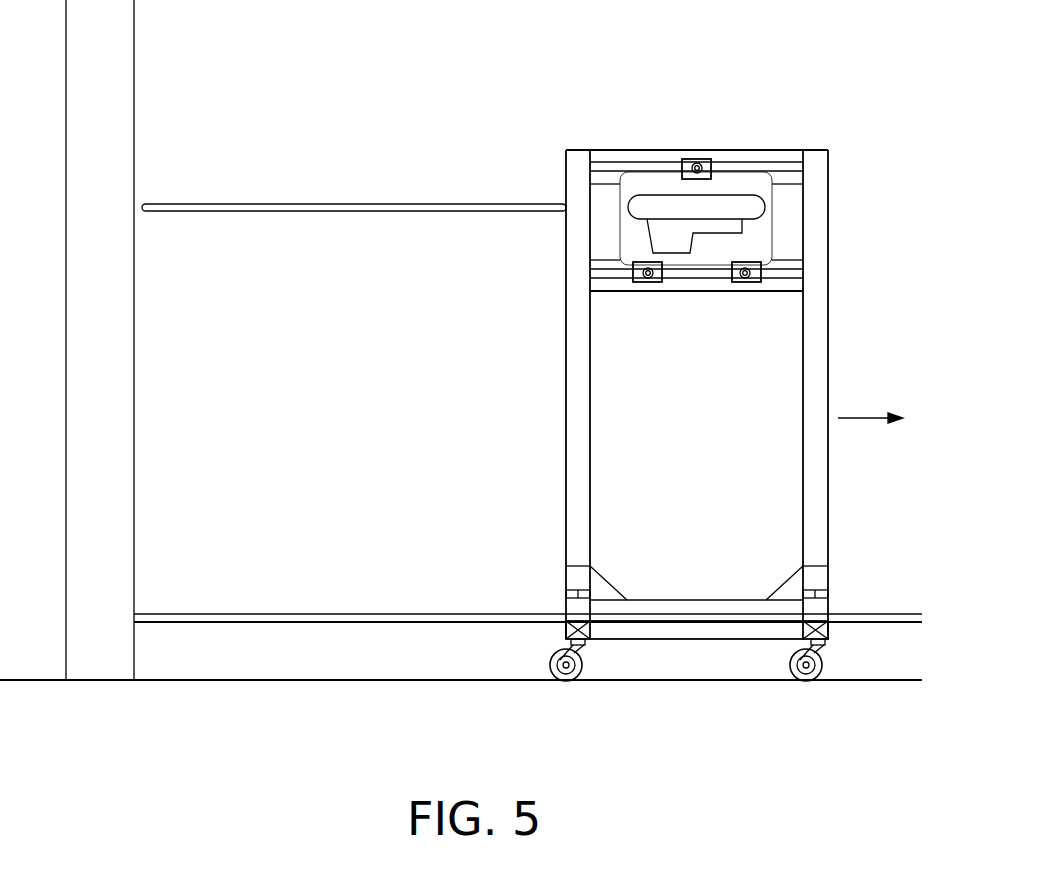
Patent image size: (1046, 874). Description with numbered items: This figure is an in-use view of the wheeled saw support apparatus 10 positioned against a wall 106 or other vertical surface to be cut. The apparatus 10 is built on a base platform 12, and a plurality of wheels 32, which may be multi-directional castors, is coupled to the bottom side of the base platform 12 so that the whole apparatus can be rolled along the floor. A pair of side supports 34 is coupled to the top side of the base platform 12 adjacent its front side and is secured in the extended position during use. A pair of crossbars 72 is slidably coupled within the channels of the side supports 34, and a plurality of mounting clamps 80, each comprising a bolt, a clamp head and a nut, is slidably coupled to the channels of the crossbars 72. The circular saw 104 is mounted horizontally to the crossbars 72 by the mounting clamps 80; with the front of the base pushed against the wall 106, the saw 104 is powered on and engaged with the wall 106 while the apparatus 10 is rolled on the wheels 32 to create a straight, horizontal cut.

The wheeled saw support apparatus 10 is at (864, 324).
The base platform 12 is at (672, 630).
The wheels 32 is at (562, 681).
The side supports 34 is at (812, 438).
The crossbars 72 is at (606, 272).
The mounting clamps 80 is at (745, 262).
The circular saw 104 is at (752, 206).
The wall 106 is at (134, 141).